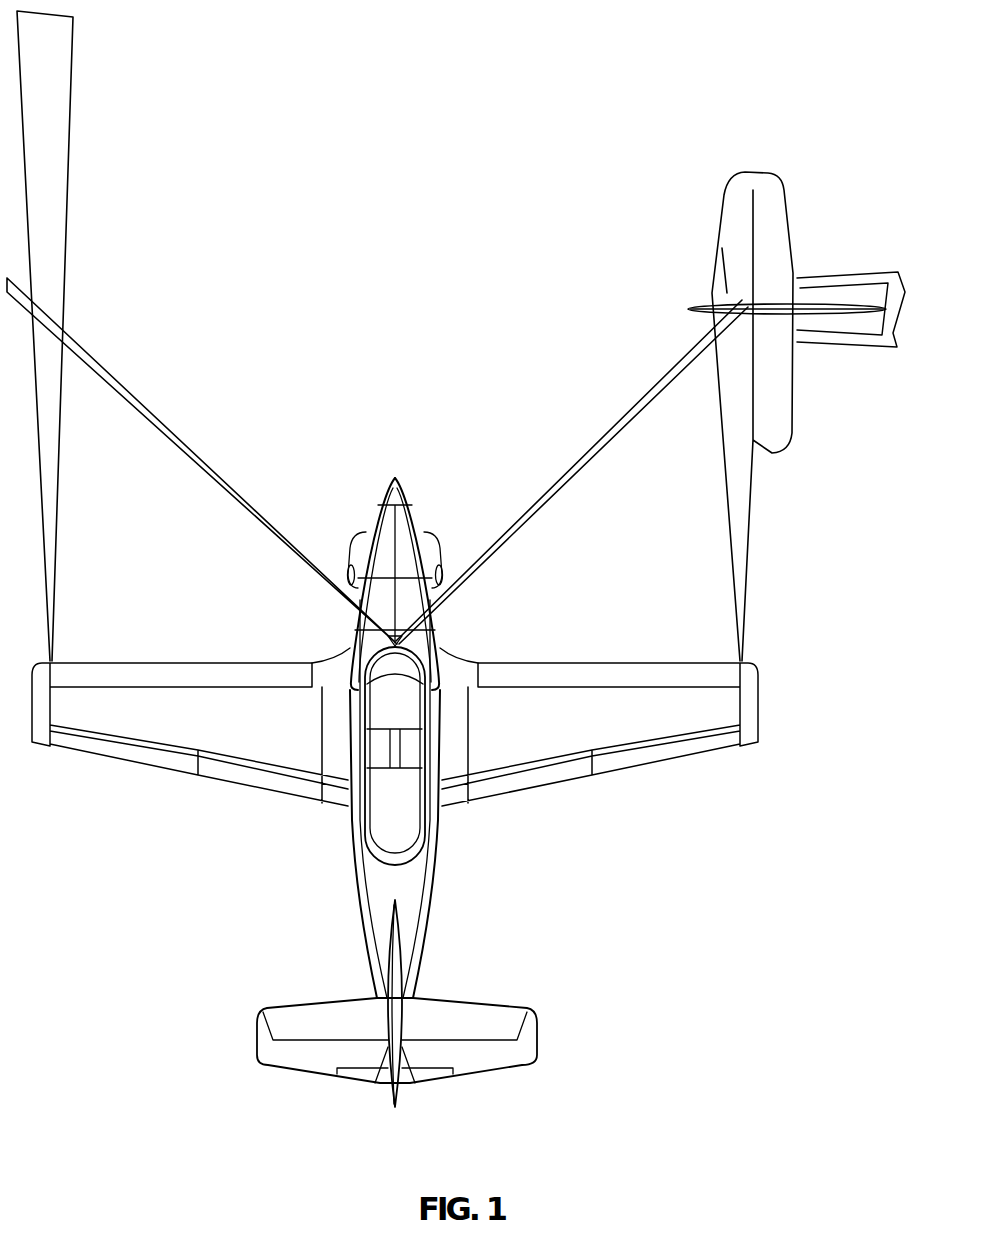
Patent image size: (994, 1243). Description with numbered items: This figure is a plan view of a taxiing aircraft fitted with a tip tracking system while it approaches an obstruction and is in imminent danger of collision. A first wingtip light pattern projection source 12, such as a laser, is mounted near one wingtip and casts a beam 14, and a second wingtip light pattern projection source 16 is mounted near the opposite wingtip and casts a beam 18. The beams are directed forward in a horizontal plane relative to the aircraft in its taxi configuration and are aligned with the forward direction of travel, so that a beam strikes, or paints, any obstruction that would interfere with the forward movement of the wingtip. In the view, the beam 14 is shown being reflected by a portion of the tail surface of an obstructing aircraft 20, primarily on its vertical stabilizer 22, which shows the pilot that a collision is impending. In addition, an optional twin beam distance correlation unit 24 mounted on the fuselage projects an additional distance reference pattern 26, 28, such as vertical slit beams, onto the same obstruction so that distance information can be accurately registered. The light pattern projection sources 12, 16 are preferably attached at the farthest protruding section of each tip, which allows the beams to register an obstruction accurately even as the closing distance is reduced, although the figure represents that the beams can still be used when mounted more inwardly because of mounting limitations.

The first wingtip light pattern projection source 12 is at (745, 660).
The beam 14 is at (745, 505).
The second wingtip light pattern projection source 16 is at (57, 660).
The beam 18 is at (52, 503).
The obstructing aircraft 20 is at (836, 218).
The vertical stabilizer 22 is at (700, 303).
The twin beam distance correlation unit 24 is at (400, 642).
The distance reference pattern 26 is at (555, 490).
The distance reference pattern 28 is at (228, 497).